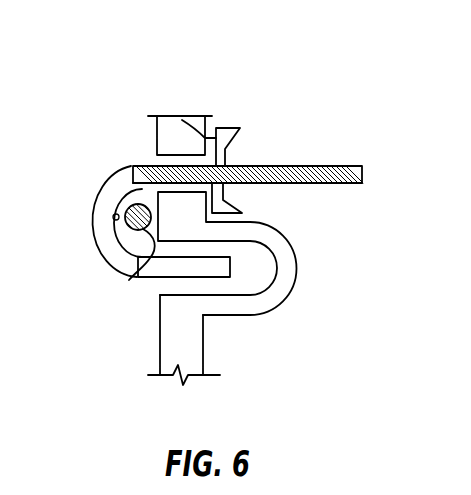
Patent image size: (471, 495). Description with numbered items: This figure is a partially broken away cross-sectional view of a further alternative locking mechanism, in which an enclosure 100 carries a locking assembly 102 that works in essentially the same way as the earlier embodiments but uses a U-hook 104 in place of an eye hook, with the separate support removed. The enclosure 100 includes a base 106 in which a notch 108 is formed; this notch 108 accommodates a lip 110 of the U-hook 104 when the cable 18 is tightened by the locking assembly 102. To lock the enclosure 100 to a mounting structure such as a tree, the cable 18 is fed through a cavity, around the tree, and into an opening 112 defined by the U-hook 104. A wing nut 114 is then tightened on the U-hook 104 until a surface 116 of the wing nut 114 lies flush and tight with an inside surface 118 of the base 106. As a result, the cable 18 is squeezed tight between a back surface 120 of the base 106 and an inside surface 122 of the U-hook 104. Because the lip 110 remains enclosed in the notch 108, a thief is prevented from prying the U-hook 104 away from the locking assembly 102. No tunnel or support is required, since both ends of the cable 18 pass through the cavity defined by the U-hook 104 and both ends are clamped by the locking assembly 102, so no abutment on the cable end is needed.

The enclosure 100 is at (232, 64).
The locking assembly 102 is at (245, 147).
The U-hook 104 is at (338, 186).
The base 106 is at (172, 353).
The notch 108 is at (293, 284).
The lip 110 is at (246, 269).
The opening 112 is at (137, 193).
The wing nut 114 is at (230, 126).
The surface of wing nut 116 is at (182, 120).
The inside surface of base 118 is at (222, 214).
The back surface of base 120 is at (127, 283).
The inside surface of U-hook 122 is at (113, 209).
The cable 18 is at (112, 265).